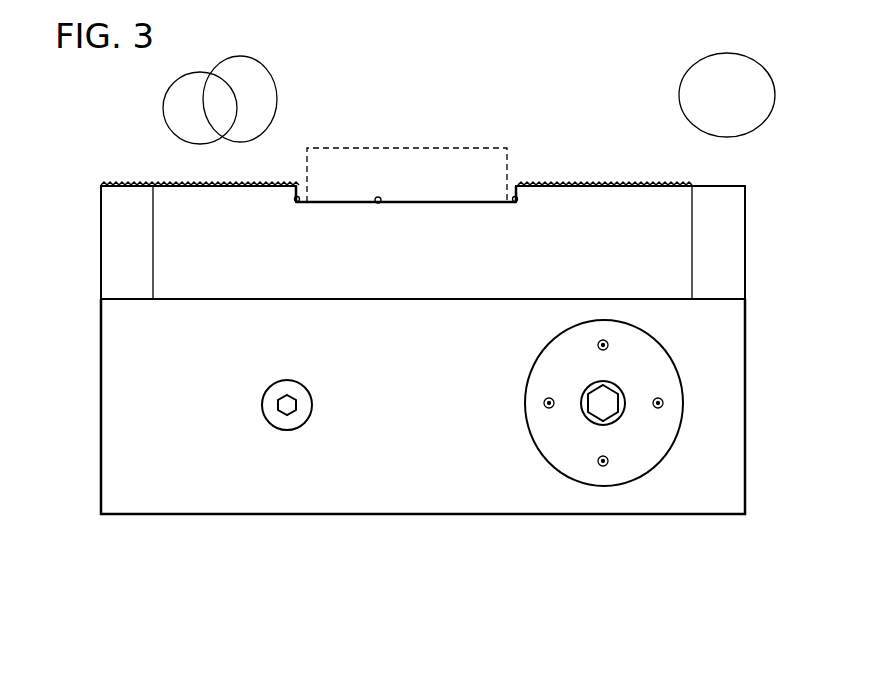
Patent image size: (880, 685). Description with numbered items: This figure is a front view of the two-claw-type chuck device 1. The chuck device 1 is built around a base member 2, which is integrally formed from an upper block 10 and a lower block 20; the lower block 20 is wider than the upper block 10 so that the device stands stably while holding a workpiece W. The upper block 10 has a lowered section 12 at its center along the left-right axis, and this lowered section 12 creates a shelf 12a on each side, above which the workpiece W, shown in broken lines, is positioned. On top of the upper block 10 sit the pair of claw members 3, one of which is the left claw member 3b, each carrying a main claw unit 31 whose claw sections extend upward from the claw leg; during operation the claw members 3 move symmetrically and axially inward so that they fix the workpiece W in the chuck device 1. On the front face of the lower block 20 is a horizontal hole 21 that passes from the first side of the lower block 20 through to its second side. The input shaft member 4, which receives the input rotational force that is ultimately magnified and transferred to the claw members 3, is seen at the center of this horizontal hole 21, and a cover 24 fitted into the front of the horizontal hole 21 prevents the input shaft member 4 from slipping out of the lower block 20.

The chuck device 1 is at (438, 198).
The base member 2 is at (423, 448).
The claw members 3 is at (255, 166).
The left claw member 3b is at (651, 167).
The input shaft member 4 is at (622, 400).
The upper block 10 is at (416, 288).
The lowered section 12 is at (380, 210).
The shelf 12a is at (295, 205).
The lower block 20 is at (384, 496).
The horizontal hole 21 is at (528, 386).
The covers 24 is at (553, 448).
The main claw unit 31 is at (163, 180).
The workpiece W is at (403, 146).